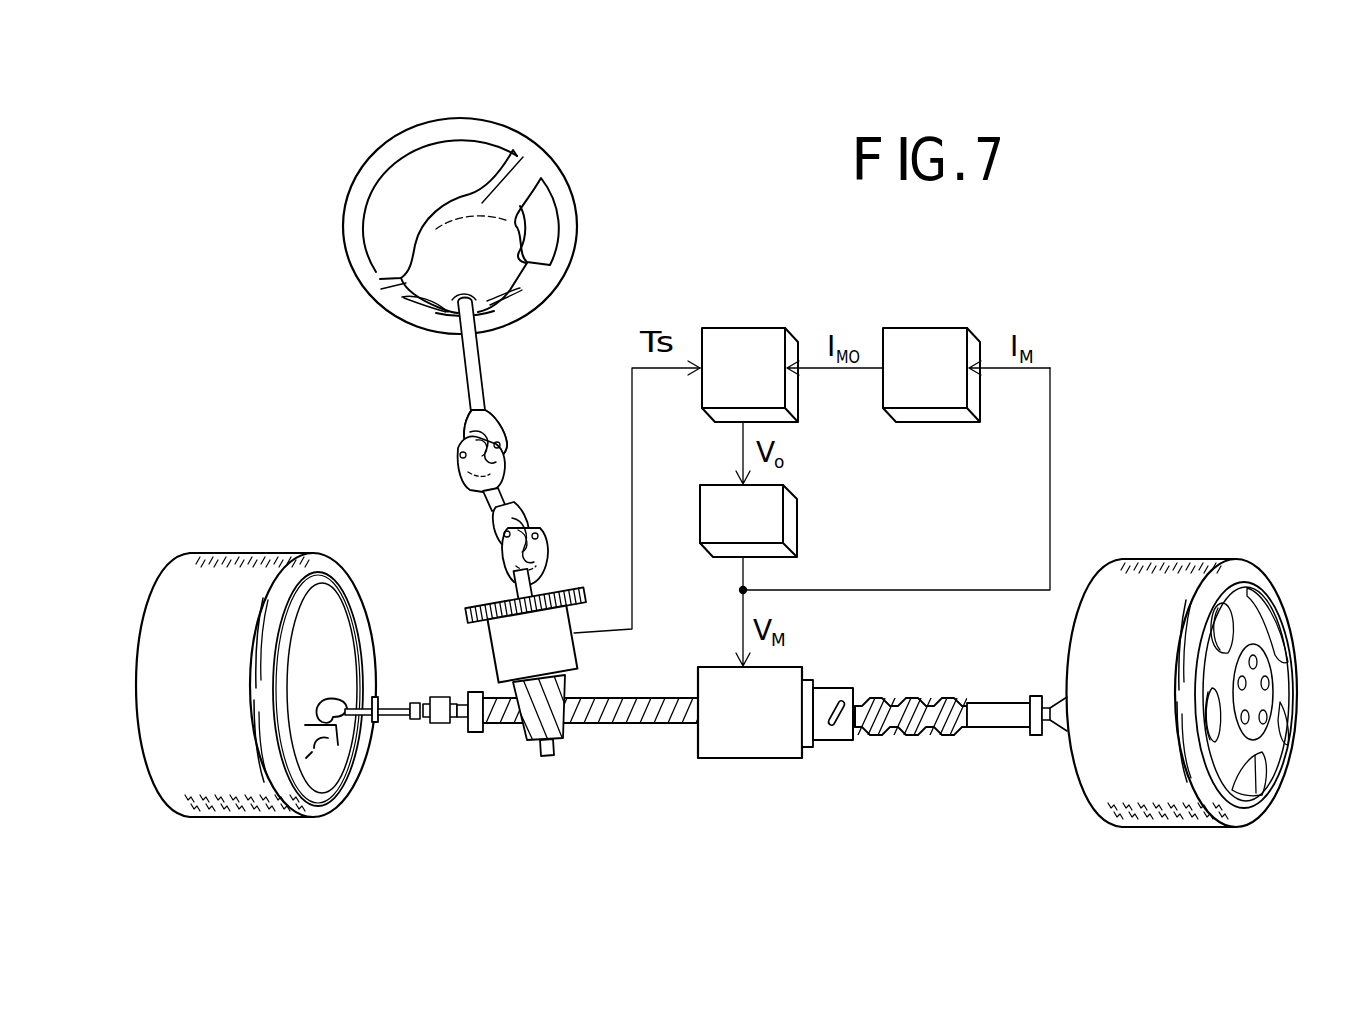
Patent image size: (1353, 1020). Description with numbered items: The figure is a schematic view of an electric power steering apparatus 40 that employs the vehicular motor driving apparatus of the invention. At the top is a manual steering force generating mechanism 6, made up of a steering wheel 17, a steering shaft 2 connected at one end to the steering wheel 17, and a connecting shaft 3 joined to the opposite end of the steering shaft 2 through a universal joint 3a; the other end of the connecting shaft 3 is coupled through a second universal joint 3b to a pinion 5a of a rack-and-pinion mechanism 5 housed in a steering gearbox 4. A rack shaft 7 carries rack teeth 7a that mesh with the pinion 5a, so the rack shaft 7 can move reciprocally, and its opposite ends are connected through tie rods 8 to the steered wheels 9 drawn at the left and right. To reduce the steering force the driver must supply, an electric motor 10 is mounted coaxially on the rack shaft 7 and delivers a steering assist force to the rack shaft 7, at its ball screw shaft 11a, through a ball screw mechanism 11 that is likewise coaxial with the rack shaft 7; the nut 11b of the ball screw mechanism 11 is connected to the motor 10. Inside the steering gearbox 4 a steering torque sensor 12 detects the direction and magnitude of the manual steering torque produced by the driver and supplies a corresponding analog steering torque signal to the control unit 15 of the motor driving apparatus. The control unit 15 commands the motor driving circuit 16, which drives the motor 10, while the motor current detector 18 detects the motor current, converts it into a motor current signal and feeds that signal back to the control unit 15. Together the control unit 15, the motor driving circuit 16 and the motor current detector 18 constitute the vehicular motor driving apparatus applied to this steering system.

The electric power steering apparatus 40 is at (640, 136).
The steering wheel 17 is at (372, 178).
The steering shaft 2 is at (462, 356).
The manual steering force generating mechanism 6 is at (435, 468).
The universal joint 3a is at (497, 425).
The connecting shaft 3 is at (500, 490).
The universal joint 3b is at (530, 514).
The steering torque sensor 12 is at (490, 660).
The steered wheels 9 is at (228, 552).
The tie rods 8 is at (348, 708).
The rack-and-pinion mechanism 5 is at (500, 733).
The rack teeth 7a is at (590, 712).
The pinion 5a is at (555, 732).
The steering gearbox 4 is at (535, 757).
The electric motor 10 is at (768, 748).
The nut 11b is at (836, 735).
The ball screw mechanism 11 is at (918, 697).
The ball screw shaft 11a is at (918, 735).
The rack shaft 7 is at (1010, 715).
The control unit 15 is at (722, 328).
The motor current detector 18 is at (935, 328).
The motor driving circuit 16 is at (792, 522).